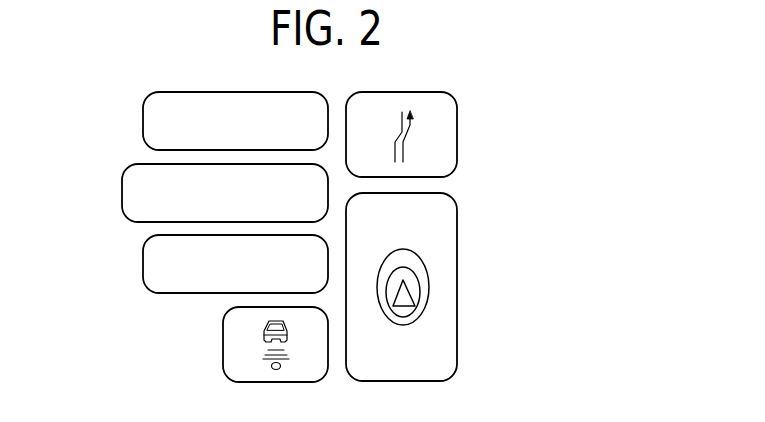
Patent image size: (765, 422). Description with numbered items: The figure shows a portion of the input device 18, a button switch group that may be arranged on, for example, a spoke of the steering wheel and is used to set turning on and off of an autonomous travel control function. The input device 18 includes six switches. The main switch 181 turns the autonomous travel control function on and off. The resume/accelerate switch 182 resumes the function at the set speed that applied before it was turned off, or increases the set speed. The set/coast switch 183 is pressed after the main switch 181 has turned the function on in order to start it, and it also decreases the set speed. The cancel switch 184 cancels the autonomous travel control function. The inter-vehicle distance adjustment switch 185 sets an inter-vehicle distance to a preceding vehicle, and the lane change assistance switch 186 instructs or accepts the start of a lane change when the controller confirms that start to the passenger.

The input device 18 is at (607, 127).
The main switch 181 is at (457, 207).
The resume/accelerate switch 182 is at (143, 106).
The set/coast switch 183 is at (143, 249).
The cancel switch 184 is at (122, 176).
The inter-vehicle distance adjustment switch 185 is at (223, 319).
The lane change assistance switch 186 is at (457, 106).